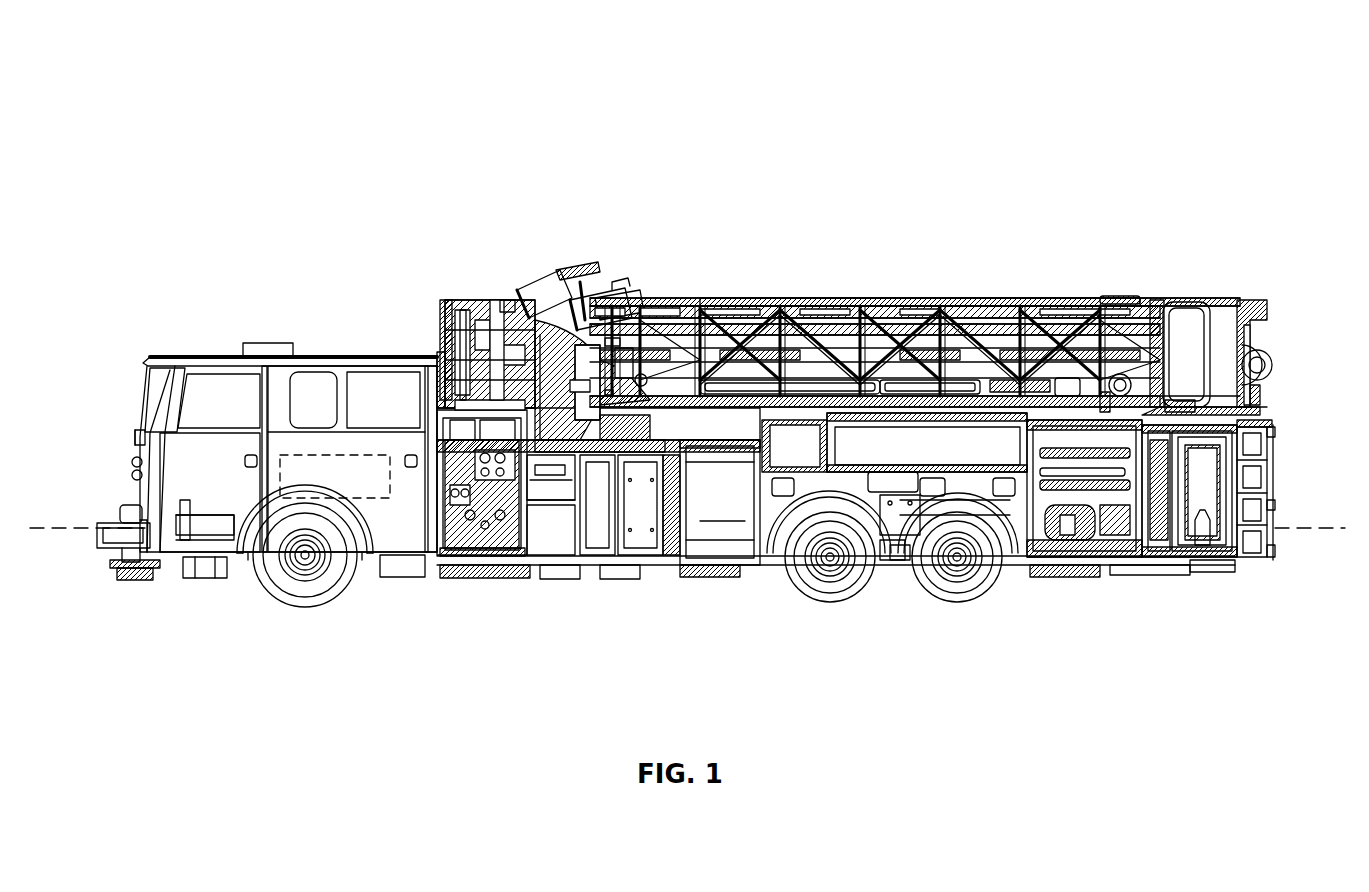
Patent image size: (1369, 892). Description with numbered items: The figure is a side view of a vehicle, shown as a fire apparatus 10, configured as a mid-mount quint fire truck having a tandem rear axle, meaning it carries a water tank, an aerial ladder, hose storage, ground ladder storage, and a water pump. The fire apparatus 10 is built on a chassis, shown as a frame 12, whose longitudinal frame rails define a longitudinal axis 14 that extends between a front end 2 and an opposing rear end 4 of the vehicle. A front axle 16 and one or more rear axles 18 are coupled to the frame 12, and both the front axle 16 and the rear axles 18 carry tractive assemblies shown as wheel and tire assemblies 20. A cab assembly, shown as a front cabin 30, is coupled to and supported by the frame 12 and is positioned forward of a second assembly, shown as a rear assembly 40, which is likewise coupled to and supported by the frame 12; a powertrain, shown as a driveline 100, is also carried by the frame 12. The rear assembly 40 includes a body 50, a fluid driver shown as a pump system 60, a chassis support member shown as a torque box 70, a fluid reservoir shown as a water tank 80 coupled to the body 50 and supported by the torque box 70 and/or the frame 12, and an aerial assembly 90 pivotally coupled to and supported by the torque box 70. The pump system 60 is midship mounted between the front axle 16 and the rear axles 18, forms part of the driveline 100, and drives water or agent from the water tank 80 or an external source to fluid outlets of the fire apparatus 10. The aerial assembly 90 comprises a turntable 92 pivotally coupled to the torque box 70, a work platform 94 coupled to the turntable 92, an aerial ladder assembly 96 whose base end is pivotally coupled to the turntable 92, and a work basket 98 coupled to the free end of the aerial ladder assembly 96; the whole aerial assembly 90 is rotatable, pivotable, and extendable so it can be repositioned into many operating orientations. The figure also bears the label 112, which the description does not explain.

The fire apparatus 10 is at (90, 118).
The front end 2 is at (128, 412).
The rear end 4 is at (1285, 412).
The frame 12 is at (1040, 568).
The longitudinal axis 14 is at (1290, 528).
The front axle 16 is at (300, 605).
The rear axles 18 is at (815, 612).
The wheel and tire assemblies 20 is at (340, 584).
The front cabin 30 is at (238, 335).
The rear assembly 40 is at (696, 268).
The body 50 is at (650, 520).
The pump system 60 is at (470, 578).
The torque box 70 is at (935, 580).
The water tank 80 is at (835, 570).
The aerial assembly 90 is at (455, 252).
The turntable 92 is at (623, 300).
The work platform 94 is at (437, 352).
The aerial ladder assembly 96 is at (760, 290).
The work basket 98 is at (1278, 305).
The driveline 100 is at (300, 505).
The compartment door 112 is at (725, 509).